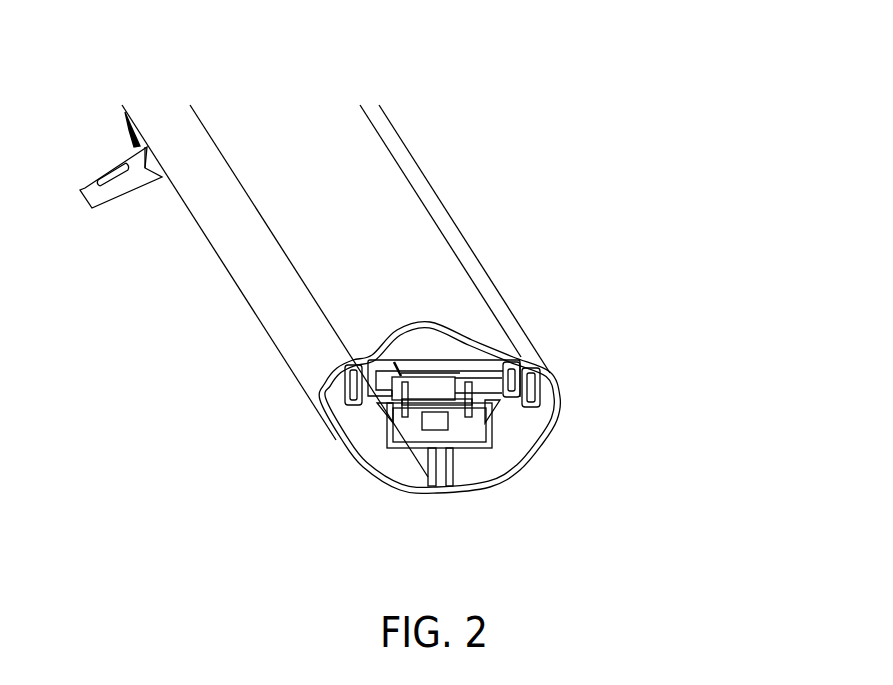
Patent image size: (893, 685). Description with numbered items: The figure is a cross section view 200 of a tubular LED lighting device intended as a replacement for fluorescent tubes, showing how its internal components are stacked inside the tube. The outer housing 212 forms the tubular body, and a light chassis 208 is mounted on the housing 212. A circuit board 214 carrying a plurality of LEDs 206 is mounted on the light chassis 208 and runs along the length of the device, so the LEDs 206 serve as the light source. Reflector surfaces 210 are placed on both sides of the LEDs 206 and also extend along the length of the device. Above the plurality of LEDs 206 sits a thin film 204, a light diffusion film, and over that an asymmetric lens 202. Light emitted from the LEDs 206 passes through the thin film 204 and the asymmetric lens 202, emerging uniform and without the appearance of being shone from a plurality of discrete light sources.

The cross section view 200 is at (560, 136).
The asymmetric lens 202 is at (457, 344).
The thin film 204 is at (464, 373).
The LEDs 206 is at (442, 396).
The light chassis 208 is at (472, 429).
The reflector surfaces 210 is at (426, 386).
The housing 212 is at (398, 490).
The circuit board 214 is at (418, 405).